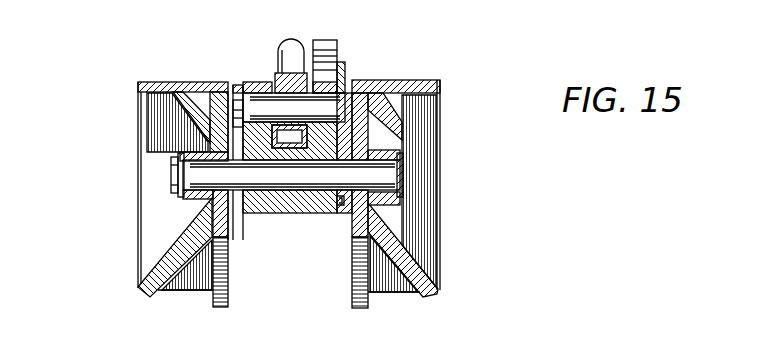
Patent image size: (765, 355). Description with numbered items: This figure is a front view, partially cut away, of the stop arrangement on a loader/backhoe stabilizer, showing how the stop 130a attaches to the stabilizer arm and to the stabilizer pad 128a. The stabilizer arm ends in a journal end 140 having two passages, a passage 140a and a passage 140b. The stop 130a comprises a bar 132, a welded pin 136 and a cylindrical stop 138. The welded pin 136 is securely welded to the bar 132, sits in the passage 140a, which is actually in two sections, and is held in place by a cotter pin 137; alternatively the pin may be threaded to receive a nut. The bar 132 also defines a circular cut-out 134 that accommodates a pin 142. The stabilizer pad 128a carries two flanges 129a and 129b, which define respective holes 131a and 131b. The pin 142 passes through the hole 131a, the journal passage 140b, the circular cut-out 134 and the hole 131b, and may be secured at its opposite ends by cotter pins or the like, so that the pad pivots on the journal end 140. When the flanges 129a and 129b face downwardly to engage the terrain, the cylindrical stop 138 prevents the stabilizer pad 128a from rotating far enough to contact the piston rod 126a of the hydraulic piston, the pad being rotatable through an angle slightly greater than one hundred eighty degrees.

The hydraulic piston 126a is at (275, 85).
The stabilizer pad 128a is at (150, 164).
The flange 129a is at (225, 232).
The flange 129b is at (352, 230).
The stop 130a is at (335, 133).
The hole 131a is at (192, 207).
The hole 131b is at (385, 205).
The bar 132 is at (340, 67).
The circular cut-out 134 is at (346, 200).
The welded pin 136 is at (343, 107).
The cotter pin 137 is at (237, 88).
The cylindrical stop 138 is at (325, 40).
The journal end 140 is at (262, 140).
The passage 140a is at (263, 92).
The passage 140b is at (273, 212).
The pin 142 is at (380, 170).